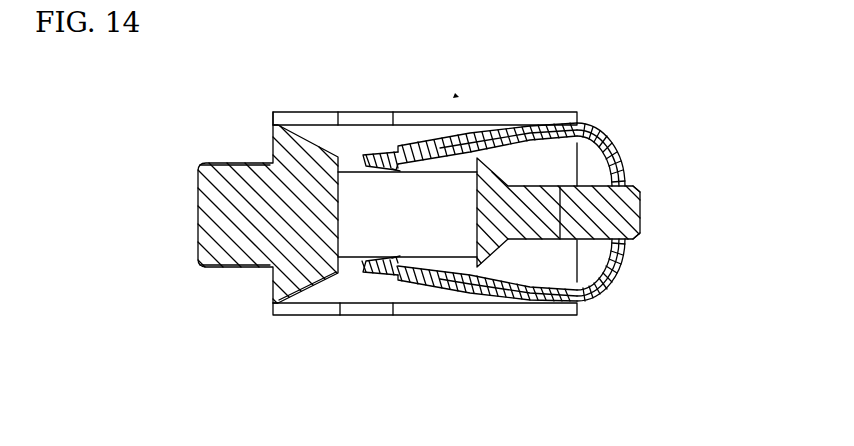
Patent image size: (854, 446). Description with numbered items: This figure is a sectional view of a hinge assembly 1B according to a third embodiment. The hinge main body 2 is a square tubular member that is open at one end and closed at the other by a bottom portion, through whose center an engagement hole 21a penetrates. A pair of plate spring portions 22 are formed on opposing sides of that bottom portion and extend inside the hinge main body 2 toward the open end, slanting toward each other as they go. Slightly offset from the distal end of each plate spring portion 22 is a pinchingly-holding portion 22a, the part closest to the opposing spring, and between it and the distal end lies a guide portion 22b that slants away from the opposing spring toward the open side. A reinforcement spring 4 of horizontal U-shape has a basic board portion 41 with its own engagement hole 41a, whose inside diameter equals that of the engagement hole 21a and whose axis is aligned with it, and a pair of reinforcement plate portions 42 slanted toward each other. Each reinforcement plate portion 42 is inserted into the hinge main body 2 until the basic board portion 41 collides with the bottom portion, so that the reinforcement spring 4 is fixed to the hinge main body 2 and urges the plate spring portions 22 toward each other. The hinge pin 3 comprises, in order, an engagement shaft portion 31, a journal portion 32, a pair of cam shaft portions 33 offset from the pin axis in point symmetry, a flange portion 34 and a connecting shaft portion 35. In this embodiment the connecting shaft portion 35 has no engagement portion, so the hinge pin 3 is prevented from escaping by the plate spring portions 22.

The hinge assembly 1B is at (451, 100).
The hinge main body 2 is at (543, 112).
The hinge pin 3 is at (233, 163).
The reinforcement spring 4 is at (619, 151).
The engagement hole 21a is at (641, 233).
The plate spring portion 22 is at (430, 128).
The pinchingly-holding portion 22a is at (400, 172).
The guide portion 22b is at (370, 155).
The engagement shaft portion 31 is at (229, 268).
The journal portion 32 is at (316, 285).
The cam shaft portion 33 is at (385, 235).
The flange portion 34 is at (500, 270).
The connecting shaft portion 35 is at (562, 226).
The basic board portion 41 is at (620, 259).
The engagement hole 41a is at (634, 190).
The reinforcement plate portion 42 is at (504, 133).